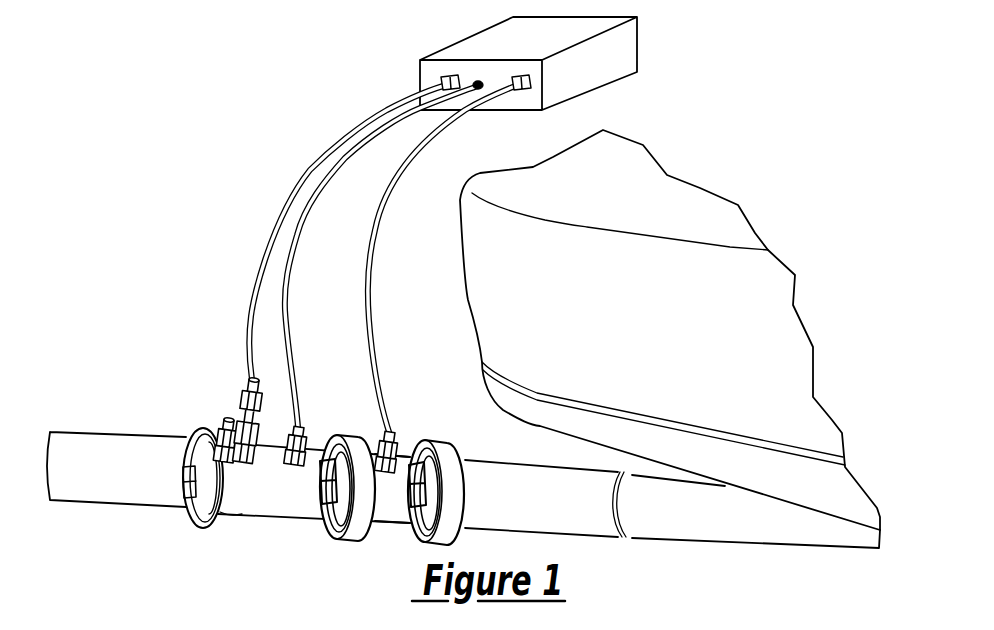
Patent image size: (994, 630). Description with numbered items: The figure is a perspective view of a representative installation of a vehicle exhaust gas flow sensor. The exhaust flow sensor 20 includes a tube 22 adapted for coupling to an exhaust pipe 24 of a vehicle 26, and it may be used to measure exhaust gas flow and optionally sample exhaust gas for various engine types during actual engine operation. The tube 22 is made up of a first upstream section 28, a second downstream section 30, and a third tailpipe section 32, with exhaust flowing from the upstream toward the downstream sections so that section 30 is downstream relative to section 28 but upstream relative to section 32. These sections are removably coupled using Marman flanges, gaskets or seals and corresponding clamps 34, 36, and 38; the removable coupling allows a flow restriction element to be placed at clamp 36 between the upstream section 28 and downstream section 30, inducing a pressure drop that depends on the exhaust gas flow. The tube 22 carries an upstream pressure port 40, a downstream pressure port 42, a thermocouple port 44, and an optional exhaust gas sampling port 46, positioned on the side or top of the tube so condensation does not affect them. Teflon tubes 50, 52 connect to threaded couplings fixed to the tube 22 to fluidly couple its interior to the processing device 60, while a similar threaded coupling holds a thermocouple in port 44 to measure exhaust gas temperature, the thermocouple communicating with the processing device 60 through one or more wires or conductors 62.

The exhaust flow sensor 20 is at (262, 560).
The tube 22 is at (298, 518).
The exhaust pipe 24 is at (685, 538).
The vehicle 26 is at (772, 327).
The first (upstream) section 28 is at (398, 522).
The second (downstream) section 30 is at (242, 516).
The third (tailpipe) section 32 is at (120, 432).
The clamp 34 is at (445, 435).
The clamp 36 is at (353, 433).
The clamp 38 is at (203, 422).
The upstream pressure port 40 is at (398, 433).
The downstream pressure port 42 is at (304, 428).
The thermocouple port 44 is at (268, 383).
The exhaust gas sampling port 46 is at (230, 422).
The Teflon tube 50 is at (433, 140).
The Teflon tube 52 is at (282, 275).
The processing device 60 is at (636, 42).
The wires or conductors 62 is at (288, 215).